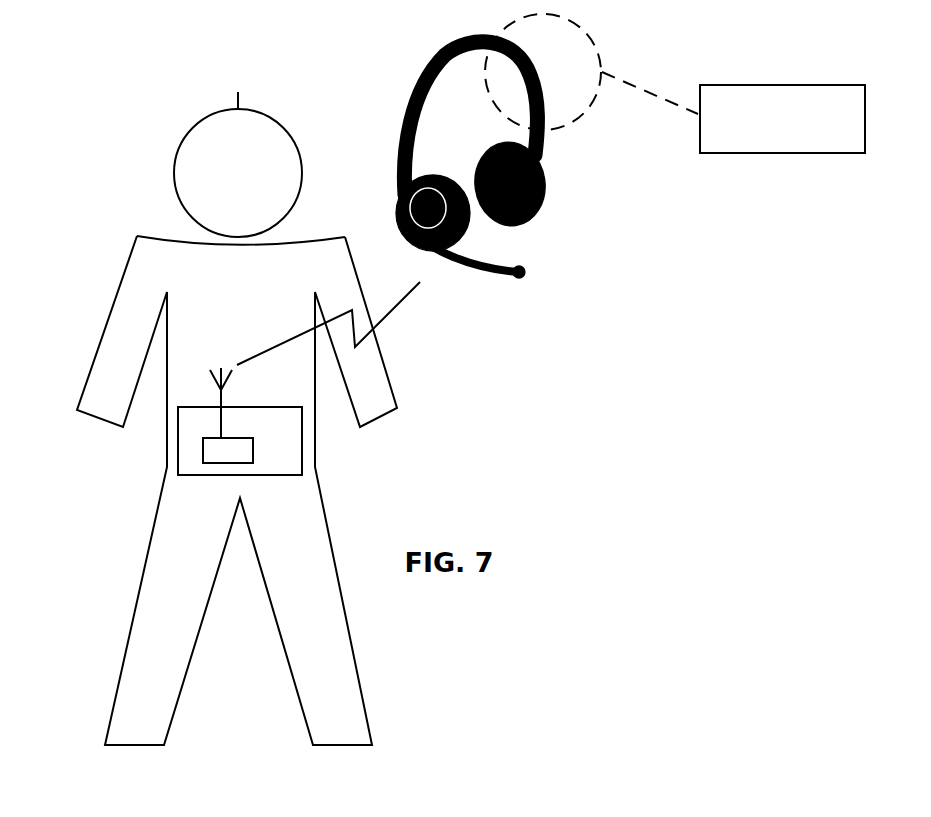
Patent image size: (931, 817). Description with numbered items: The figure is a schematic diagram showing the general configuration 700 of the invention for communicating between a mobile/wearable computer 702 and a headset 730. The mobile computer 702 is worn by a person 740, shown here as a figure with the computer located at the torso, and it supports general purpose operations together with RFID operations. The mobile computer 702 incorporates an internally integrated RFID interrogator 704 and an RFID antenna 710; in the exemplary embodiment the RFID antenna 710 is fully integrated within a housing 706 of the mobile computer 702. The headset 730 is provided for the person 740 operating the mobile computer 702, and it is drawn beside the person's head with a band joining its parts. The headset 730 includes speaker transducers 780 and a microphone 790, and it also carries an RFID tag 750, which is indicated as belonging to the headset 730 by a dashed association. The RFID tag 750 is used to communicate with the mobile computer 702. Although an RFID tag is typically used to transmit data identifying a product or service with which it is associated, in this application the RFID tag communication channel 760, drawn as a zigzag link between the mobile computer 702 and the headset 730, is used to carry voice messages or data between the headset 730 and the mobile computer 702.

The general configuration 700 is at (83, 186).
The mobile/wearable computer 702 is at (195, 420).
The RFID interrogator 704 is at (253, 445).
The housing 706 is at (278, 408).
The RFID antenna 710 is at (217, 405).
The headset 730 is at (403, 150).
The person 740 is at (255, 308).
The RFID tag 750 is at (765, 142).
The RFID tag communication channel 760 is at (393, 308).
The speaker transducers 780 is at (545, 192).
The microphone 790 is at (500, 283).